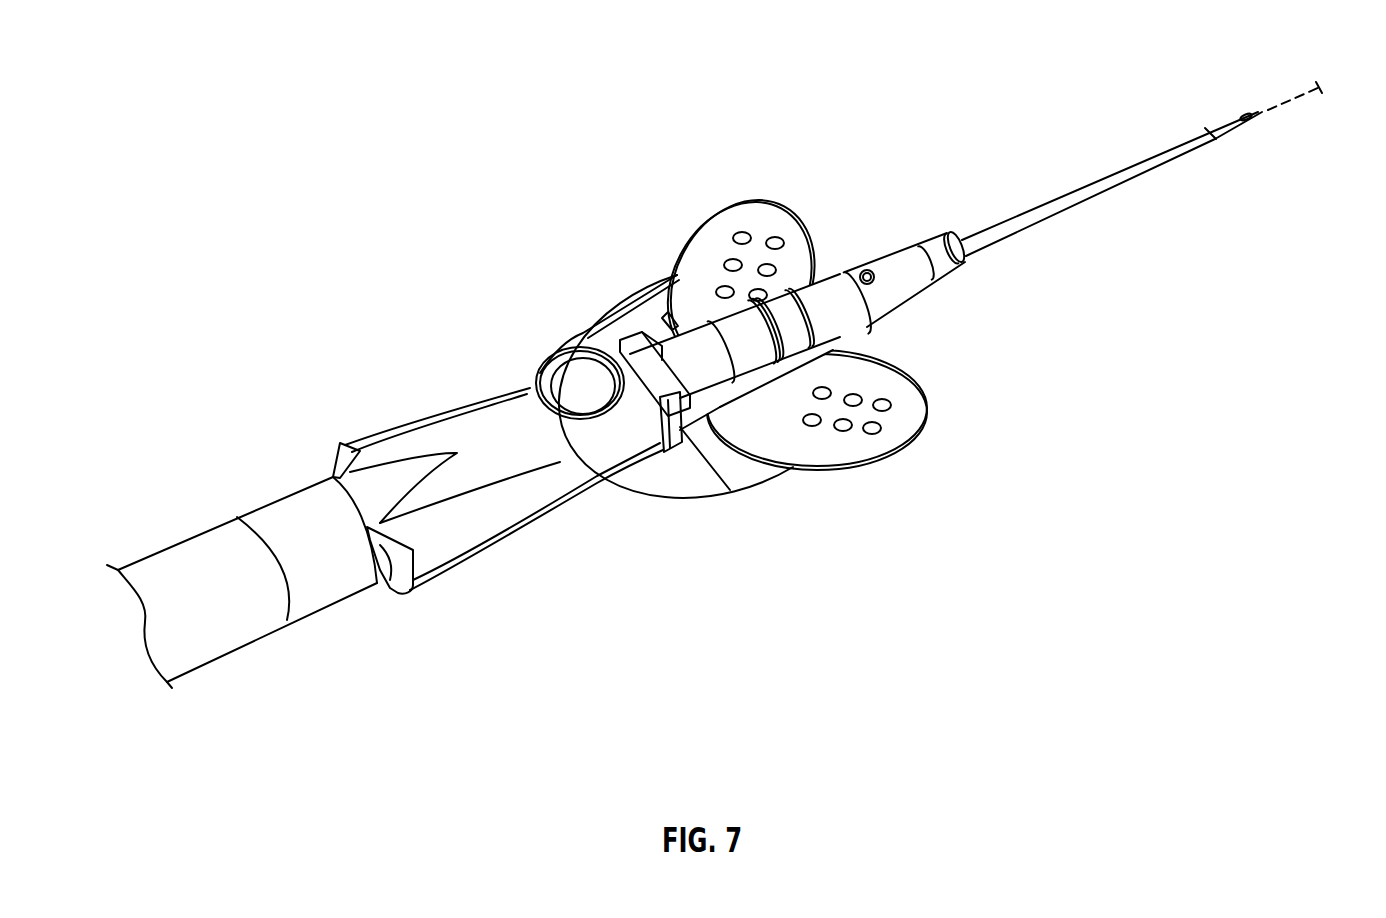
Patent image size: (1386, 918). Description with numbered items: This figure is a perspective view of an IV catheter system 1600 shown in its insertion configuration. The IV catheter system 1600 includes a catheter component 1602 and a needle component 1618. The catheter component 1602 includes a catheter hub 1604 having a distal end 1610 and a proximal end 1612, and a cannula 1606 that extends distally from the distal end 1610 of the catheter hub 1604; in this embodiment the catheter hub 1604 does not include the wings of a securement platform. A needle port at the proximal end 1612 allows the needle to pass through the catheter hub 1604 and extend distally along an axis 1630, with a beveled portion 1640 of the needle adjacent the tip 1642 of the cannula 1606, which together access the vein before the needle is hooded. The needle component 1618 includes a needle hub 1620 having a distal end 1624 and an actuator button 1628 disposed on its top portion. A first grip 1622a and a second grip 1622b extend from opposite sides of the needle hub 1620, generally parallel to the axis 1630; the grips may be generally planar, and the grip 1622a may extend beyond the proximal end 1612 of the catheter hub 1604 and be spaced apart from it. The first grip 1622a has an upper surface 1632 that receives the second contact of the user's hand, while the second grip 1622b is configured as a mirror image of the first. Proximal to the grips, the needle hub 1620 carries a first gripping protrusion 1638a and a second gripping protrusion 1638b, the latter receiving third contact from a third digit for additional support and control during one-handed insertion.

The IV catheter system 1600 is at (368, 184).
The catheter component 1602 is at (891, 230).
The catheter hub 1604 is at (847, 325).
The cannula 1606 is at (1140, 158).
The distal end 1610 is at (955, 237).
The proximal end 1612 is at (647, 337).
The needle component 1618 is at (228, 462).
The needle hub 1620 is at (457, 420).
The first grip 1622a is at (742, 470).
The second grip 1622b is at (645, 300).
The distal end 1624 is at (665, 455).
The actuator button 1628 is at (575, 388).
The axis 1630 is at (1313, 93).
The upper surface 1632 is at (608, 330).
The first gripping protrusion 1638a is at (433, 573).
The second gripping protrusion 1638b is at (367, 457).
The beveled portion 1640 is at (1256, 113).
The tip 1642 is at (1228, 138).